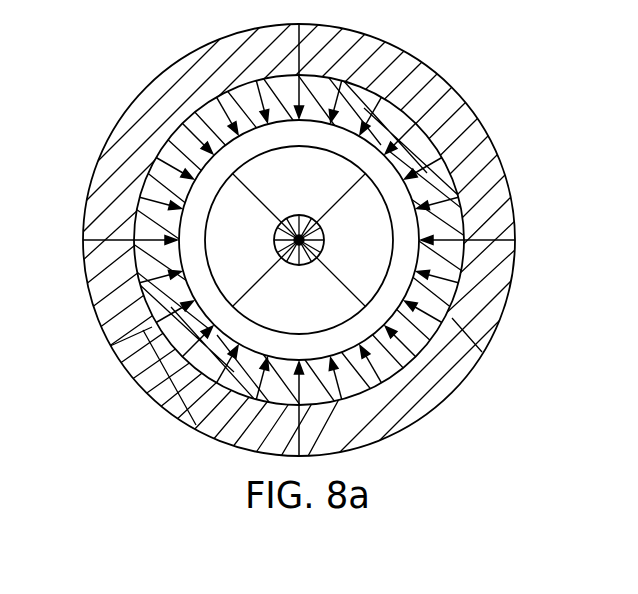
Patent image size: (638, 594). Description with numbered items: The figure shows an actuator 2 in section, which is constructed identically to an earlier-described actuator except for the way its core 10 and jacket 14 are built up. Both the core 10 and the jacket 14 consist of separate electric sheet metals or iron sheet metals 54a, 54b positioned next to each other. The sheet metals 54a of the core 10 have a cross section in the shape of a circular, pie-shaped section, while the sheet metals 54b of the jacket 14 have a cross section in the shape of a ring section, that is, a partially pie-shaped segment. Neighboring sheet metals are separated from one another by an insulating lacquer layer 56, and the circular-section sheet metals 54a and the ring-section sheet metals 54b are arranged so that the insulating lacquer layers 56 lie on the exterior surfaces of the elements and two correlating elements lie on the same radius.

The actuator 2 is at (83, 287).
The jacket 14 is at (450, 103).
The sheet metals in the shape of a ring section 54b is at (137, 113).
The insulating lacquer layer 56 is at (463, 333).
The core 10 is at (290, 257).
The sheet metals in the shape of a circular section 54a is at (305, 215).